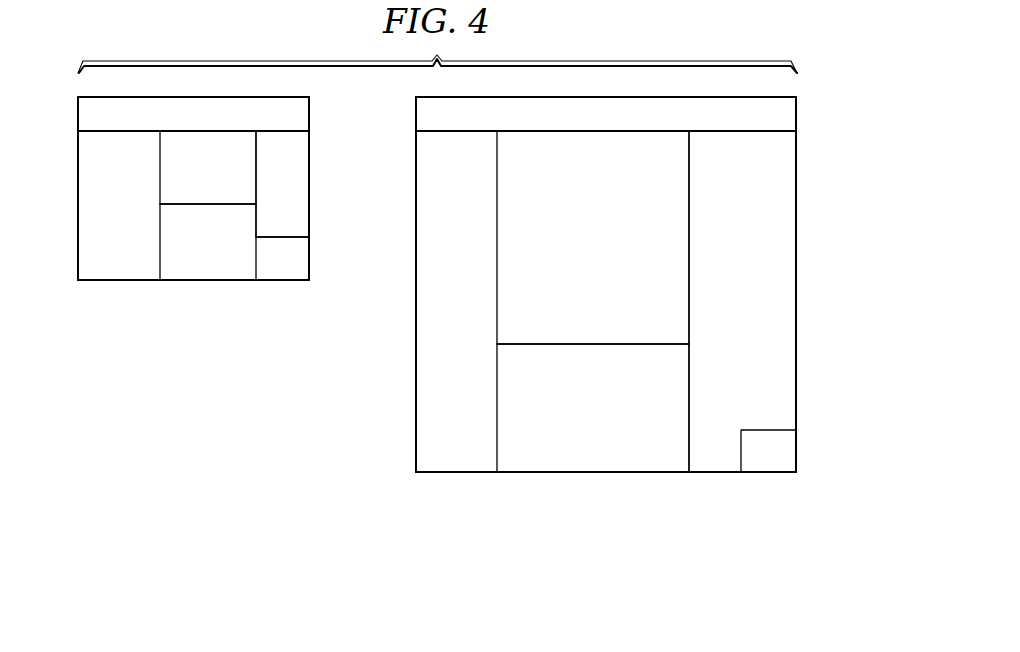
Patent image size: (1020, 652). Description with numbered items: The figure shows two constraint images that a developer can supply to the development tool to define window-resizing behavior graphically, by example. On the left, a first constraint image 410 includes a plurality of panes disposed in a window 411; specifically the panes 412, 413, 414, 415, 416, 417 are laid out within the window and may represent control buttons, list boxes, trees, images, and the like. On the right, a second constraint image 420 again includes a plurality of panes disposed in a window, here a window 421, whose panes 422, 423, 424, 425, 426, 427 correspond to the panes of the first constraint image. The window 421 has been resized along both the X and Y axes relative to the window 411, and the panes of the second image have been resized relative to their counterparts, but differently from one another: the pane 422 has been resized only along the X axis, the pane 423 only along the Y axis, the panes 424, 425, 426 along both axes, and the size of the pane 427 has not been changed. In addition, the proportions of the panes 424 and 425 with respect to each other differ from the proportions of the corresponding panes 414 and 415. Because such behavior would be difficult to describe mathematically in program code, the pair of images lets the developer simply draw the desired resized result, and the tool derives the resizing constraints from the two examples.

The constraint image 410 is at (199, 350).
The window 411 is at (174, 284).
The pane 412 is at (302, 114).
The pane 413 is at (84, 196).
The pane 414 is at (226, 186).
The pane 415 is at (226, 256).
The pane 416 is at (302, 182).
The pane 417 is at (302, 257).
The constraint image 420 is at (645, 532).
The window 421 is at (707, 477).
The pane 422 is at (791, 114).
The pane 423 is at (423, 375).
The pane 424 is at (610, 252).
The pane 425 is at (610, 422).
The pane 426 is at (790, 257).
The pane 427 is at (790, 452).